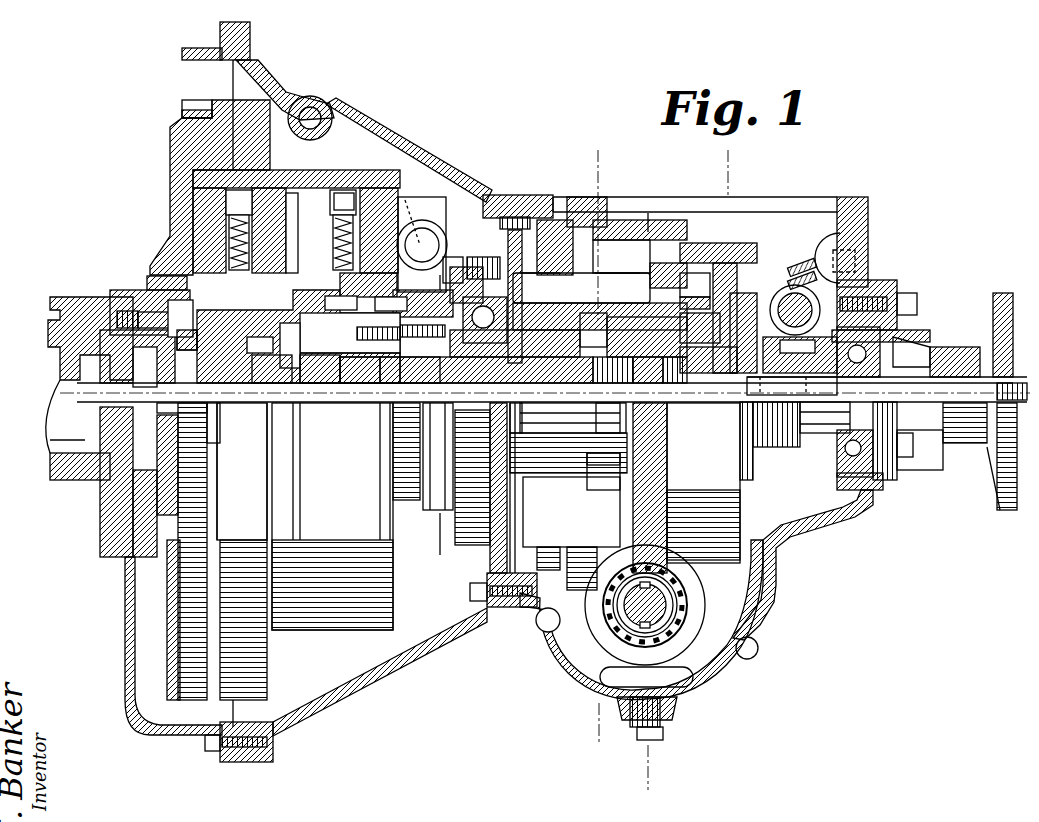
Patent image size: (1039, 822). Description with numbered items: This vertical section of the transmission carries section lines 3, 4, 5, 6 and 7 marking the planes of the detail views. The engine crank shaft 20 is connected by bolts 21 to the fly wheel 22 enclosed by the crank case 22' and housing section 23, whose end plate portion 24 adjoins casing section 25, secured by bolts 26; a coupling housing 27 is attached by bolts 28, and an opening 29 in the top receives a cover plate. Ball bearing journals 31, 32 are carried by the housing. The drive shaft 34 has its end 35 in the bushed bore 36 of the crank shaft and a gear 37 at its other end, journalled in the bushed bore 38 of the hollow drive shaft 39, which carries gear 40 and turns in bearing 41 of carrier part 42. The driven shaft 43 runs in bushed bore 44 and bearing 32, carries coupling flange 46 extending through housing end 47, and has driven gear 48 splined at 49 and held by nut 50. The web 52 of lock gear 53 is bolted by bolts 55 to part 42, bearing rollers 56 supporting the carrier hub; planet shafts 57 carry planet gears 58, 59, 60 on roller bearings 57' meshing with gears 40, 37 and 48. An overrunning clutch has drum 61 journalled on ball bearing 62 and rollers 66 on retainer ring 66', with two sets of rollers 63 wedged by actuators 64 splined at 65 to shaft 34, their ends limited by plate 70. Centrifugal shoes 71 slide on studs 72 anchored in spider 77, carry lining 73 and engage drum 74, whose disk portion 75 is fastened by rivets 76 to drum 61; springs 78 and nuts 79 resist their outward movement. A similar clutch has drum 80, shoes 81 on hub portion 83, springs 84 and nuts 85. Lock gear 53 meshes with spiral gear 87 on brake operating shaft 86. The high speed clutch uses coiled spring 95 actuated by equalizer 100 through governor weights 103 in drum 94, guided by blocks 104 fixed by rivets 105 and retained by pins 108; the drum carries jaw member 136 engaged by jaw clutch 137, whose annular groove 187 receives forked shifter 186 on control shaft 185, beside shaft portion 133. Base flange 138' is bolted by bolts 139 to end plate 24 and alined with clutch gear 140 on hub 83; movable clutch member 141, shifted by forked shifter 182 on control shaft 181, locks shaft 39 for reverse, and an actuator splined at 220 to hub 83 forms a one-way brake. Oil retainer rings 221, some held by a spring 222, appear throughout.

The section line 3- 3 is at (220, 148).
The section line 4- 4 is at (438, 275).
The section line 5- 5 is at (622, 158).
The section line 6- 6 is at (752, 173).
The section line 7- 7 is at (662, 222).
The crank shaft 20 is at (56, 362).
The bolts 21 is at (135, 295).
The fly wheel 22 is at (199, 467).
The engine crank case 22' is at (152, 646).
The housing section 23 is at (402, 666).
The end plate portion 24 is at (495, 558).
The casing section 25 is at (785, 538).
The bolts 26 is at (520, 197).
The coupling housing 27 is at (905, 334).
The bolts 28 is at (900, 300).
The opening 29 is at (814, 200).
The ball bearing journal 31 is at (455, 265).
The ball bearing journal 32 is at (842, 488).
The drive shaft 34 is at (318, 376).
The end of drive shaft 35 is at (130, 410).
The bushed bore 36 is at (62, 386).
The gear 37 is at (604, 388).
The bushed bore 38 is at (552, 396).
The hollow drive shaft 39 is at (380, 376).
The gear 40 is at (545, 376).
The bearing 41 is at (500, 372).
The part of planet gear carrier 42 is at (520, 376).
The driven shaft 43 is at (722, 403).
The bushed bore 44 is at (583, 402).
The propeller shaft coupling flange 46 is at (962, 346).
The end of coupling housing 47 is at (990, 330).
The driven gear 48 is at (618, 379).
The splines 49 is at (740, 410).
The locked nut 50 is at (603, 406).
The web of lock gear 52 is at (690, 248).
The lock gear 53 is at (655, 482).
The bolts 55 is at (590, 478).
The bearing rollers 56 is at (678, 379).
The planet shafts 57 is at (581, 288).
The roller bearings 57' is at (580, 284).
The planet gear 58 is at (545, 250).
The planet gear 59 is at (582, 212).
The planet gear 60 is at (610, 250).
The clutch drum 61 is at (188, 311).
The ball bearing journal 62 is at (165, 392).
The clutch rollers 63 is at (260, 386).
The actuators 64 is at (238, 386).
The splines 65 is at (213, 405).
The roller bearings 66 is at (365, 326).
The retainer ring 66' is at (286, 370).
The plate 70 is at (185, 341).
The segmental weights 71 is at (200, 216).
The stud 72 is at (205, 241).
The clutch lining 73 is at (200, 194).
The drum 74 is at (205, 164).
The disk portion 75 is at (320, 188).
The rivets 76 is at (301, 390).
The spider 77 is at (160, 274).
The spring 78 is at (228, 248).
The tension-adjusting nut 79 is at (272, 188).
The drum 80 is at (338, 180).
The segmental clutch shoes 81 is at (366, 188).
The hub portion 83 is at (462, 305).
The spring 84 is at (354, 241).
The tension adjusting nut 85 is at (344, 201).
The brake operating shaft 86 is at (660, 600).
The spiral gear 87 is at (602, 672).
The drum 94 is at (720, 262).
The coiled spring 95 is at (748, 255).
The equalizer member 100 is at (726, 376).
The governor weights 103 is at (691, 304).
The guide blocks 104 is at (662, 288).
The rivets 105 is at (653, 379).
The pins 108 is at (695, 285).
The shaft portion 133 is at (792, 386).
The jaw member 136 is at (775, 300).
The jaw clutch member 137 is at (800, 355).
The base flange 138' is at (512, 189).
The bolts 139 is at (480, 257).
The companion clutch gear 140 is at (368, 396).
The movable clutch member 141 is at (421, 431).
The control shaft 181 is at (448, 167).
The forked shifter member 182 is at (418, 222).
The second control shaft 185 is at (796, 262).
The forked shifter member 186 is at (818, 386).
The annular groove 187 is at (783, 435).
The splined connection 220 is at (255, 403).
The oil retainer rings 221 is at (302, 324).
The spring 222 is at (391, 304).